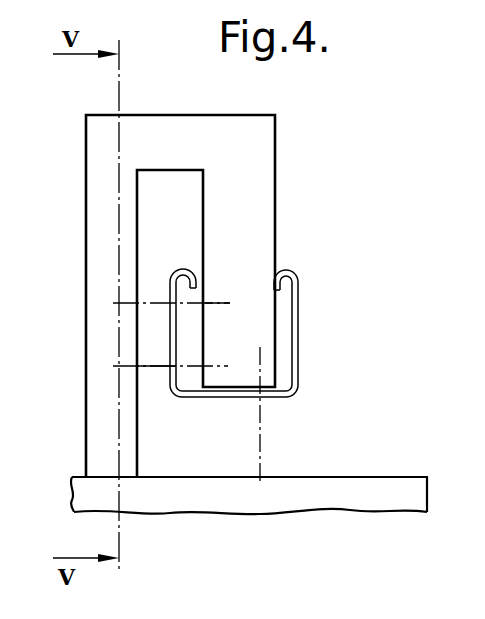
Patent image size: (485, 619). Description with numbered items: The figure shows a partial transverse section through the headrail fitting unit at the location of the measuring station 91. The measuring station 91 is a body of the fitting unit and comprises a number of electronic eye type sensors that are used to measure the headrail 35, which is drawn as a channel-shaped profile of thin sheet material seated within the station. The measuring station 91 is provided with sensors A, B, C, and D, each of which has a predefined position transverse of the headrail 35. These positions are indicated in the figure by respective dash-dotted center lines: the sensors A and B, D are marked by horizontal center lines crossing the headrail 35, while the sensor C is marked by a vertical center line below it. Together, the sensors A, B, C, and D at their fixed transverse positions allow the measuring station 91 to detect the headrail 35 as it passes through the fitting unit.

The measuring station 91 is at (282, 184).
The headrail 35 is at (298, 338).
The sensor A is at (219, 302).
The sensor B is at (164, 400).
The sensor D is at (155, 368).
The sensor C is at (262, 420).